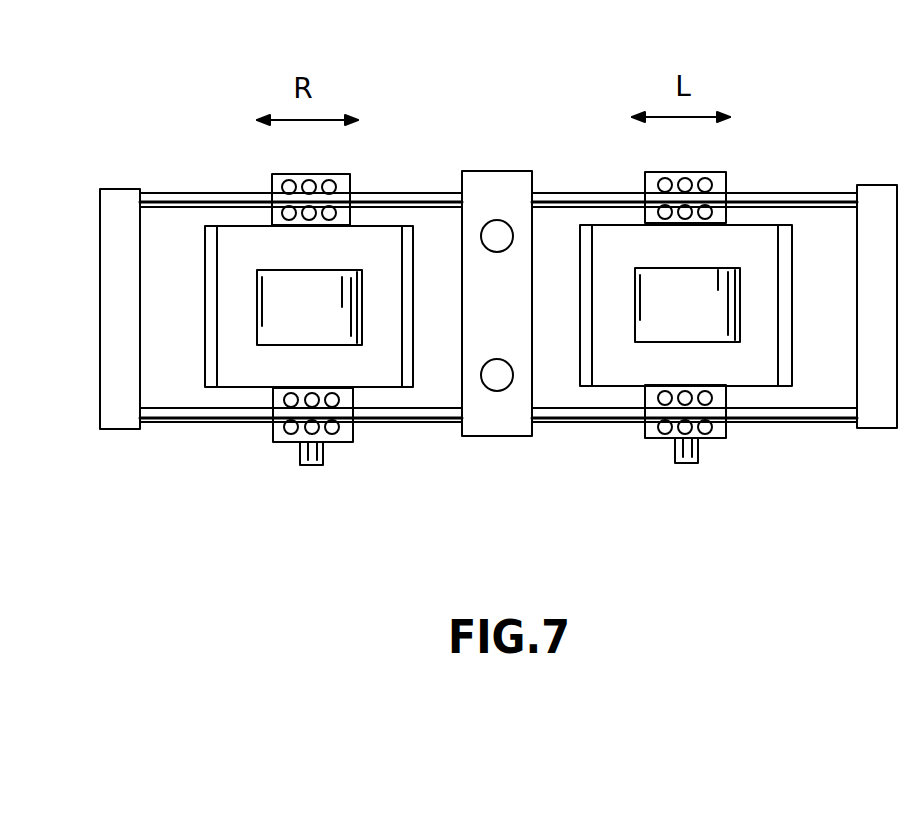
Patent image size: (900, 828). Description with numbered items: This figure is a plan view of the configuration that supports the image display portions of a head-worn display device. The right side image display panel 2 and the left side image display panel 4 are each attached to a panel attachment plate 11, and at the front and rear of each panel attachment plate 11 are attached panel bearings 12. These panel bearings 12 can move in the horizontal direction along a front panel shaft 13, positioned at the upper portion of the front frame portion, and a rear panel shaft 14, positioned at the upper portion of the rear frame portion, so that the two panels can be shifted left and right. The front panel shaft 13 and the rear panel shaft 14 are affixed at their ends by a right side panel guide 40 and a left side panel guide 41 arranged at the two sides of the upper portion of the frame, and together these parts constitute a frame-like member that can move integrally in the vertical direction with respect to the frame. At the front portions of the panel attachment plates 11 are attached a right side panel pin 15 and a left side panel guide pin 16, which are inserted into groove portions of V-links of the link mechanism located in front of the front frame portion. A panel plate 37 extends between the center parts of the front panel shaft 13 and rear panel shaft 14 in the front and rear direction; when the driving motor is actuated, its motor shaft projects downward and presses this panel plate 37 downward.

The right side image display panel 2 is at (258, 272).
The left side image display panel 4 is at (731, 268).
The panel attachment plate 11 is at (388, 228).
The panel bearing 12 is at (305, 173).
The front panel shaft 13 is at (770, 423).
The rear panel shaft 14 is at (569, 192).
The right side panel pin 15 is at (313, 465).
The left side panel guide pin 16 is at (688, 463).
The panel plate 37 is at (490, 437).
The right side panel guide 40 is at (104, 238).
The left side panel guide 41 is at (874, 187).